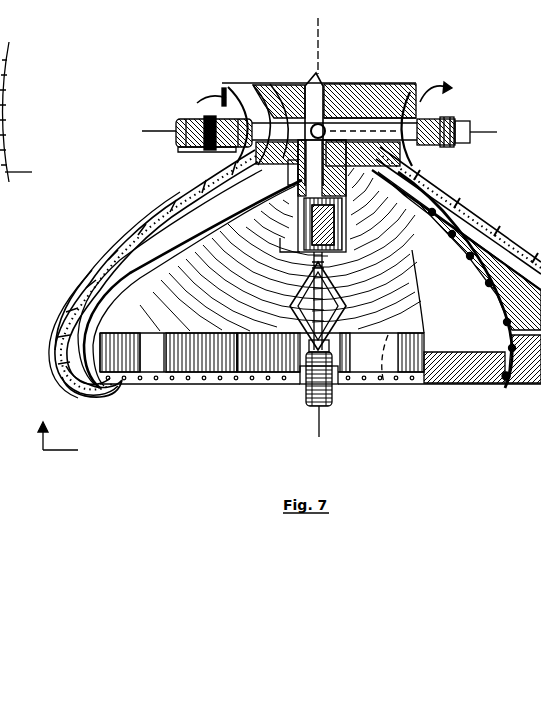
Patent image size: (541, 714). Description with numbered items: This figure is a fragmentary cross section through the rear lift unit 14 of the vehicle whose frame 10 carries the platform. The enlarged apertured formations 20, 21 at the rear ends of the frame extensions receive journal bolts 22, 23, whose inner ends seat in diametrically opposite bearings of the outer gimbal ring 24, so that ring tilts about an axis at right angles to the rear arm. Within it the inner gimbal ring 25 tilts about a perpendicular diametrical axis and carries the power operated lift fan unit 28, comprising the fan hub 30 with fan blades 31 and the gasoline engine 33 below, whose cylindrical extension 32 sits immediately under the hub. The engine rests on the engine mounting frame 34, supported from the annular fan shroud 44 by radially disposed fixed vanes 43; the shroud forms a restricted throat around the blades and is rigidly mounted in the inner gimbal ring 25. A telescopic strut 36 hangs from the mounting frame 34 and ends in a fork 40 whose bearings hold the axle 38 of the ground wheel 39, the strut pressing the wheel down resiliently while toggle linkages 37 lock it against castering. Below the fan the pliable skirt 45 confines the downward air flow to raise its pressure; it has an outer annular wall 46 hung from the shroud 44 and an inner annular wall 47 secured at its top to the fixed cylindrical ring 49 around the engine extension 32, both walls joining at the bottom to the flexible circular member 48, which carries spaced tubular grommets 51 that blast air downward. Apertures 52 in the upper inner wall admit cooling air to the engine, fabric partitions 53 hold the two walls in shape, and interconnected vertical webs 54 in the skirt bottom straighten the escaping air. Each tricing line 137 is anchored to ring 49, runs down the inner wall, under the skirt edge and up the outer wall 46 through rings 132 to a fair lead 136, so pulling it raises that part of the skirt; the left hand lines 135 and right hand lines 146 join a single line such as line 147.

The frame 10 is at (55, 428).
The lift unit 14 is at (64, 366).
The apertured formation 20 is at (186, 148).
The apertured formation 21 is at (447, 146).
The journal bolt 22 is at (174, 129).
The journal bolt 23 is at (470, 130).
The outer gimbal ring 24 is at (206, 118).
The inner gimbal ring 25 is at (236, 152).
The lift fan unit 28 is at (315, 74).
The fan hub 30 is at (280, 82).
The fan blades 31 is at (252, 84).
The cylindrical extension 32 is at (298, 190).
The gasoline engine 33 is at (306, 272).
The engine mounting frame 34 is at (280, 250).
The telescopic strut 36 is at (324, 282).
The toggle linkages 37 is at (344, 306).
The axle 38 is at (340, 388).
The ground wheel 39 is at (310, 402).
The fork 40 is at (300, 374).
The fixed vanes 43 is at (208, 172).
The fan shroud 44 is at (350, 84).
The skirt 45 is at (125, 243).
The outer annular wall 46 is at (170, 210).
The inner annular wall 47 is at (150, 228).
The circular member 48 is at (196, 386).
The cylindrical ring 49 is at (288, 172).
The tubular grommets 51 is at (248, 384).
The apertures 52 is at (262, 204).
The fabric partitions 53 is at (66, 298).
The vertical webs 54 is at (180, 328).
The rings 132 is at (96, 259).
The tricing lines 135 is at (256, 270).
The fair lead 136 is at (222, 90).
The tricing line 137 is at (200, 100).
The tricing lines 146 is at (430, 88).
The line 147 is at (498, 330).